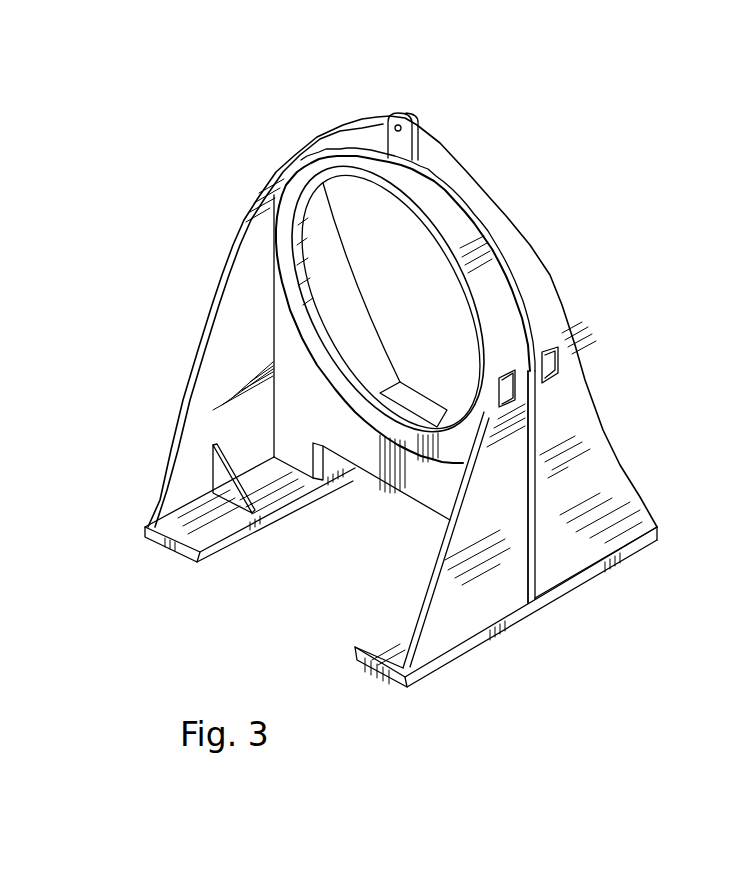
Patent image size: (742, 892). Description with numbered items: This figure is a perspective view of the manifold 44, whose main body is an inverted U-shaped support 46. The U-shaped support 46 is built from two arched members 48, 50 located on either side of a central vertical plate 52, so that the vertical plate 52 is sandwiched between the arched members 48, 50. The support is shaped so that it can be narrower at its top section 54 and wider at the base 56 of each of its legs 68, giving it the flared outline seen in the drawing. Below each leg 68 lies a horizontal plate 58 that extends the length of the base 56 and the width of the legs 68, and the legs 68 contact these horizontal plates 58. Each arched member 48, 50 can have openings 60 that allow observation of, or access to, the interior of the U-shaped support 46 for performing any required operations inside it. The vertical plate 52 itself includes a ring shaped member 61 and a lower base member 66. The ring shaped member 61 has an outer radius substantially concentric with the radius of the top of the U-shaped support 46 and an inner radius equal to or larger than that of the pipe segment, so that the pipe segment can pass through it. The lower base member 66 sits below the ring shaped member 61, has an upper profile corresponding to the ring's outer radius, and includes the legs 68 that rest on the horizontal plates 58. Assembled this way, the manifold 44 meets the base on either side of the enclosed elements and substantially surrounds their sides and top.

The manifold 44 is at (550, 152).
The U-shaped support 46 is at (527, 260).
The arched member 48 is at (597, 465).
The arched member 50 is at (450, 596).
The vertical plate 52 is at (480, 217).
The top section 54 is at (367, 148).
The base 56 is at (653, 527).
The horizontal plate 58 is at (370, 647).
The opening 60 is at (566, 360).
The ring shaped member 61 is at (458, 457).
The lower base member 66 is at (245, 392).
The leg 68 is at (300, 457).